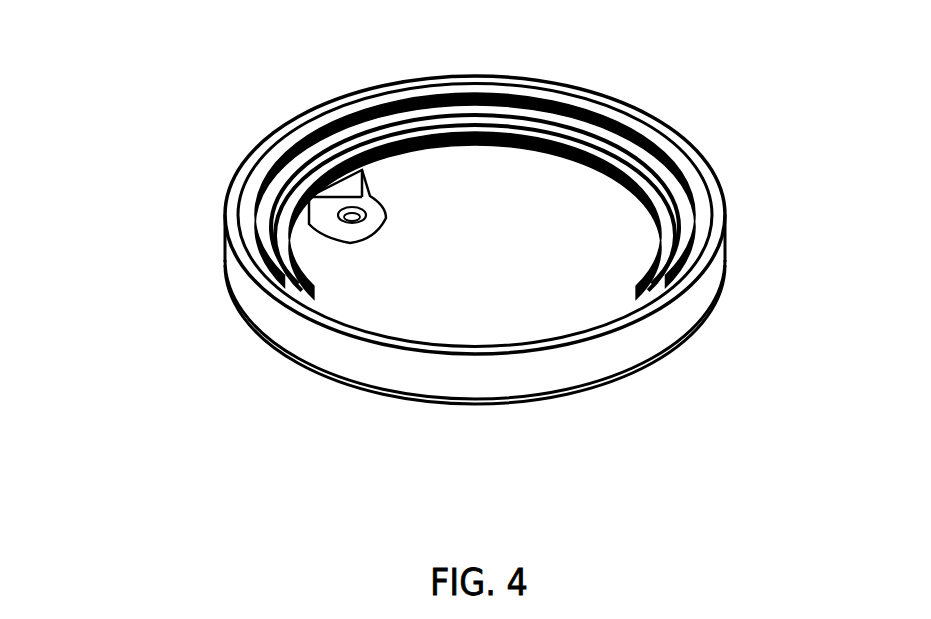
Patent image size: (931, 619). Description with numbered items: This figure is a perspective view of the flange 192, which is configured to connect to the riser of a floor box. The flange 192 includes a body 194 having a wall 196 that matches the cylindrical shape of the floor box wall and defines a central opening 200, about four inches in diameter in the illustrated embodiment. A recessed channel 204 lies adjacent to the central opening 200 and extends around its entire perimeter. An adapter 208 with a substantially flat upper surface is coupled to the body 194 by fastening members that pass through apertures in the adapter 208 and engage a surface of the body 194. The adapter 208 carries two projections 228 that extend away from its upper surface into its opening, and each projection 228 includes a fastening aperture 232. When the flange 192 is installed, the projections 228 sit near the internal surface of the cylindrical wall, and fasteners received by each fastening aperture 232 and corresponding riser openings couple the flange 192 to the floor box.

The flange 192 is at (167, 143).
The body 194 is at (653, 335).
The wall 196 is at (323, 355).
The central opening 200 is at (598, 217).
The recessed channel 204 is at (430, 113).
The adapter 208 is at (525, 402).
The projection 228 is at (343, 187).
The fastening aperture 232 is at (365, 228).